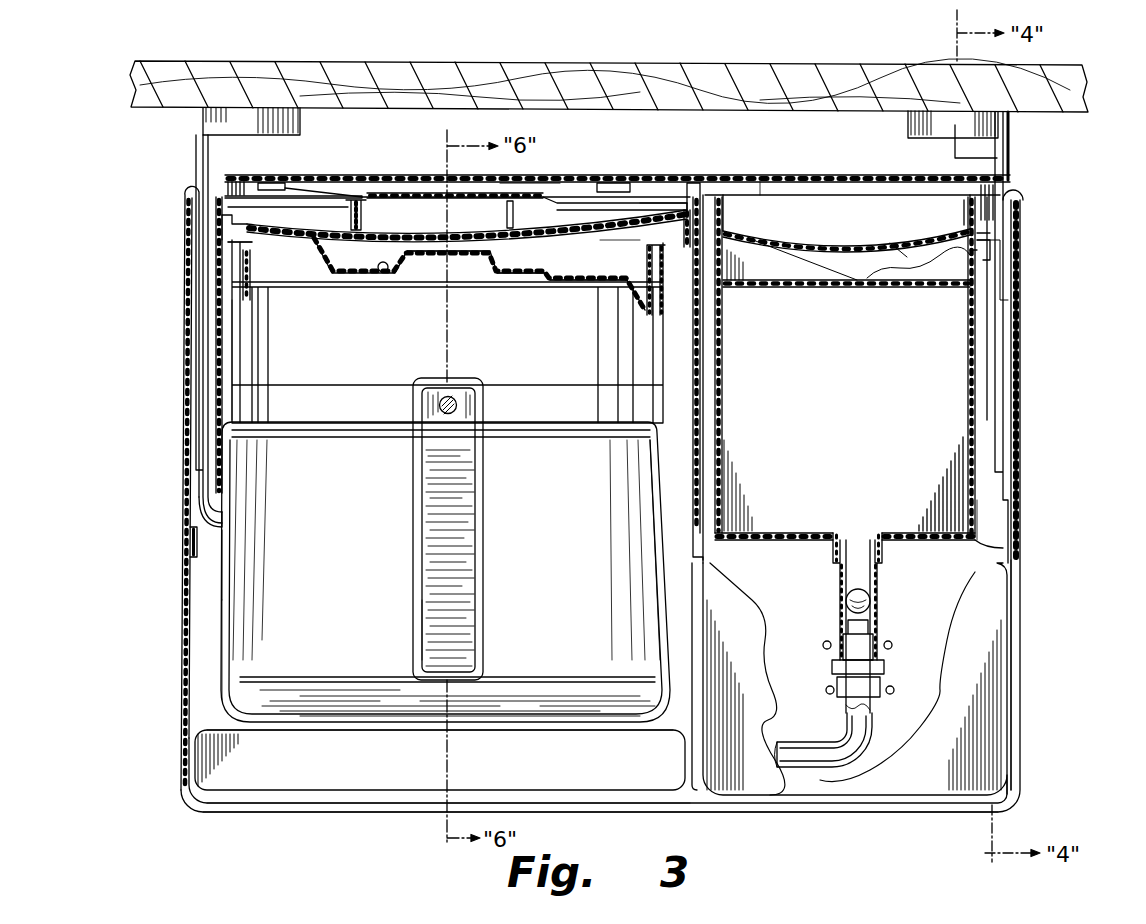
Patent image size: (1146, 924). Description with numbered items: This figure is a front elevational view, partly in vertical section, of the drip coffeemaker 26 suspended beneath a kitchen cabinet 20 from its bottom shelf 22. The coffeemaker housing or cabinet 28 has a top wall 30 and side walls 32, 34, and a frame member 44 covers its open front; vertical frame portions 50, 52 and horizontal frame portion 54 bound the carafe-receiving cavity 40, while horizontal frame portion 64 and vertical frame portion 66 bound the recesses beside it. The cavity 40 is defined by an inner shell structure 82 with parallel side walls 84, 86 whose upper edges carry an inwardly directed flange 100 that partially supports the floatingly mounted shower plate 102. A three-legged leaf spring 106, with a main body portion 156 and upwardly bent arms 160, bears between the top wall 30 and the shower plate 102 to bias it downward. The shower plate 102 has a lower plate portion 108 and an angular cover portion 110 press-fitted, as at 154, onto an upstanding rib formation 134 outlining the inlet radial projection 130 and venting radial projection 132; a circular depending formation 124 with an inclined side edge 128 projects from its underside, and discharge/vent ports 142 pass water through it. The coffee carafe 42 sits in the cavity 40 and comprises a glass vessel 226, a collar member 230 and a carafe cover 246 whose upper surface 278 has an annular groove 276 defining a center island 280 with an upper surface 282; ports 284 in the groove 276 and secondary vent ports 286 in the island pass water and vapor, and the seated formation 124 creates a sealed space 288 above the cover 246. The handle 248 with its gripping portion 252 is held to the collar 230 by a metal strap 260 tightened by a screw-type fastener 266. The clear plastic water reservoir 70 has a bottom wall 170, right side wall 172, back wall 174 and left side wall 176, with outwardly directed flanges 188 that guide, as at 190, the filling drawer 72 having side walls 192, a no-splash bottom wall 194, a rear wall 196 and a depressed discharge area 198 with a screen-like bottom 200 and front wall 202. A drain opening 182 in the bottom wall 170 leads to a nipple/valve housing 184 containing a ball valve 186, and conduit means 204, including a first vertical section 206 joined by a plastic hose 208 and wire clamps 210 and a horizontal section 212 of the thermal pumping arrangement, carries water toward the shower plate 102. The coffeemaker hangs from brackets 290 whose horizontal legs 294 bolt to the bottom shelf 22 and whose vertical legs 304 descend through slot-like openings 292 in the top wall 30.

The kitchen cabinet 20 is at (648, 63).
The bottom shelf 22 is at (515, 62).
The drip coffeemaker 26 is at (172, 622).
The housing or cabinet 28 is at (1021, 328).
The top wall 30 is at (667, 198).
The side wall 32 is at (216, 395).
The side wall 34 is at (1022, 430).
The carafe-receiving cavity 40 is at (209, 567).
The coffee carafe 42 is at (224, 603).
The frame member 44 is at (181, 733).
The vertical frame portion 50 is at (184, 691).
The vertical frame portion 52 is at (702, 647).
The horizontal frame portion 54 is at (293, 729).
The horizontal frame portion 64 is at (902, 808).
The vertical frame portion 66 is at (1009, 677).
The water reservoir 70 is at (979, 518).
The pull-out filling drawer 72 is at (773, 188).
The inner shell structure 82 is at (700, 418).
The vertical side wall 84 is at (210, 457).
The vertical side wall 86 is at (702, 362).
The inwardly directed flange 100 is at (247, 230).
The shower plate 102 is at (286, 185).
The three-legged leaf spring 106 is at (517, 178).
The lower plate portion 108 is at (641, 210).
The angular cover portion 110 is at (630, 219).
The circular depending formation 124 is at (350, 258).
The inclined side edge 128 is at (601, 283).
The inlet radial projection 130 is at (239, 183).
The venting radial projection 132 is at (693, 203).
The upstanding rib formation 134 is at (367, 216).
The discharge/vent ports 142 is at (360, 300).
The press fit 154 is at (540, 213).
The main body portion 156 is at (400, 193).
The upwardly bent arms 160 is at (568, 188).
The bottom wall 170 is at (951, 548).
The right side wall 172 is at (975, 462).
The back wall 174 is at (885, 402).
The left side wall 176 is at (724, 465).
The drain opening 182 is at (858, 531).
The nipple/valve housing 184 is at (834, 556).
The ball valve 186 is at (847, 597).
The outwardly directed flanges 188 is at (991, 254).
The guide means 190 is at (966, 255).
The side walls 192 is at (724, 213).
The no-splash bottom wall 194 is at (823, 248).
The rear wall 196 is at (833, 187).
The depressed discharge area 198 is at (831, 283).
The screen-like bottom configuration 200 is at (878, 285).
The front wall 202 is at (773, 262).
The conduit means 204 is at (770, 742).
The first vertical section 206 is at (872, 718).
The plastic hose 208 is at (887, 663).
The wire clamps 210 is at (892, 690).
The horizontal section 212 is at (820, 758).
The glass vessel 226 is at (220, 644).
The collar member 230 is at (240, 345).
The carafe cover 246 is at (228, 243).
The handle 248 is at (490, 552).
The gripping portion 252 is at (456, 608).
The metal strap 260 is at (540, 400).
The screw-type fastener 266 is at (446, 412).
The annular groove 276 is at (407, 252).
The upper surface 278 is at (627, 230).
The center island 280 is at (535, 290).
The upper surface 282 is at (427, 258).
The ports 284 is at (568, 268).
The secondary vent ports 286 is at (484, 280).
The sealed space 288 is at (357, 253).
The bracket 290 is at (1012, 151).
The slot-like openings 292 is at (1005, 179).
The horizontal leg 294 is at (908, 130).
The vertical leg 304 is at (1002, 241).